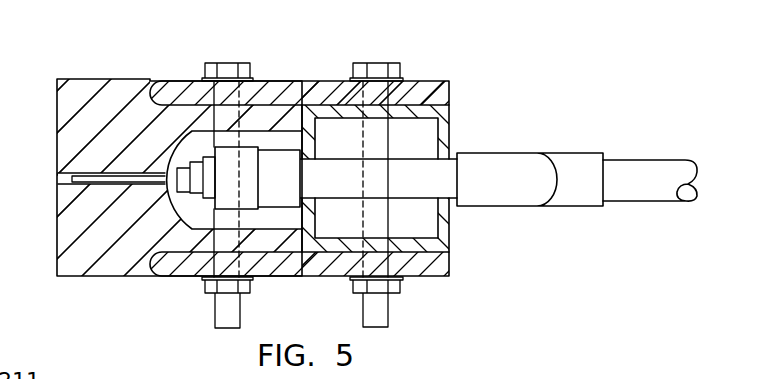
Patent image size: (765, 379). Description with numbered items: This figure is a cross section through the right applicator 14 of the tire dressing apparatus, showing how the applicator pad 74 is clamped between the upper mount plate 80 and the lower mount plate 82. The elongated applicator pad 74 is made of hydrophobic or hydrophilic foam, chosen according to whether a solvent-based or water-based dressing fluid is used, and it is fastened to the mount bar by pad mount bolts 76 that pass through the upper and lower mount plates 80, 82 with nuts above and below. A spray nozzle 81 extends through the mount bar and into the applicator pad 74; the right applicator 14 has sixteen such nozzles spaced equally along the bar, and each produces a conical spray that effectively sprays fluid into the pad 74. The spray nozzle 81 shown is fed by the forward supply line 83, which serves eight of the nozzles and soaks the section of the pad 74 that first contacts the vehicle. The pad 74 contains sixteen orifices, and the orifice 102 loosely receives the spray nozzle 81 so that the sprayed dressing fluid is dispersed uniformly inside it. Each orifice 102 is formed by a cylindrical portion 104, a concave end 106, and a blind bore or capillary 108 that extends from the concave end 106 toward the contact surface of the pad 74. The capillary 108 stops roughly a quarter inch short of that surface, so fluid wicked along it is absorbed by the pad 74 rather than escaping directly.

The right applicator 14 is at (370, 164).
The applicator pad 74 is at (80, 92).
The pad mount bolts 76 is at (226, 63).
The upper mount plate 80 is at (285, 83).
The spray nozzle 81 is at (183, 193).
The lower mount plate 82 is at (428, 265).
The forward supply line 83 is at (641, 177).
The orifice 102 is at (250, 218).
The cylindrical portion 104 is at (307, 128).
The concave end 106 is at (180, 148).
The blind bore or capillary 108 is at (61, 174).